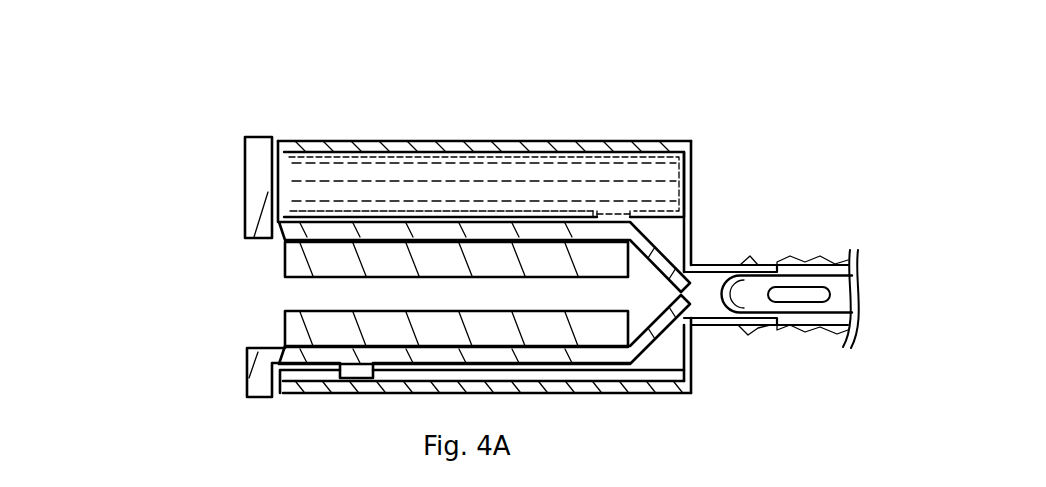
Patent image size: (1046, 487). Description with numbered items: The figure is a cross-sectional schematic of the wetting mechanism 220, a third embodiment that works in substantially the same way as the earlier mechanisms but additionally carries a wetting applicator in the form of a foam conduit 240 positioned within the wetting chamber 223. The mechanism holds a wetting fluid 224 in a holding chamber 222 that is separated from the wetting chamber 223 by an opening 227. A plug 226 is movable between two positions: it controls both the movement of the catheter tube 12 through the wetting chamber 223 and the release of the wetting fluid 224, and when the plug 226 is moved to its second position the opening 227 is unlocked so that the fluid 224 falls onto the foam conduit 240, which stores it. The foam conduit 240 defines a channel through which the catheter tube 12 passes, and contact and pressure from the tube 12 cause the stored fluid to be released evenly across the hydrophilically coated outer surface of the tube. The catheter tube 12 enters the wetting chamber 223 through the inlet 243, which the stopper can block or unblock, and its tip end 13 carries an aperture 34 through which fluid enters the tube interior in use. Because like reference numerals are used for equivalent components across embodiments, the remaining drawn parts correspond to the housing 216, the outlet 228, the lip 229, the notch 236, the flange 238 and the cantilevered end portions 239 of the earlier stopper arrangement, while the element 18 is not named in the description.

The catheter tube 12 is at (858, 333).
The tip end 13 is at (780, 334).
The cannula 18 is at (790, 258).
The aperture 34 is at (853, 280).
The cartridge 216 is at (458, 141).
The wetting mechanism 220 is at (664, 108).
The holding chamber 222 is at (484, 217).
The wetting chamber 223 is at (612, 372).
The wetting fluid 224 is at (536, 139).
The plug 226 is at (241, 371).
The opening 227 is at (613, 210).
The interior space 228 is at (296, 295).
The end cap 229 is at (245, 169).
The notch 236 is at (356, 372).
The inner shell 238 is at (288, 395).
The deflector wall 239 is at (660, 256).
The foam conduit 240 is at (289, 250).
The inlet 243 is at (711, 307).